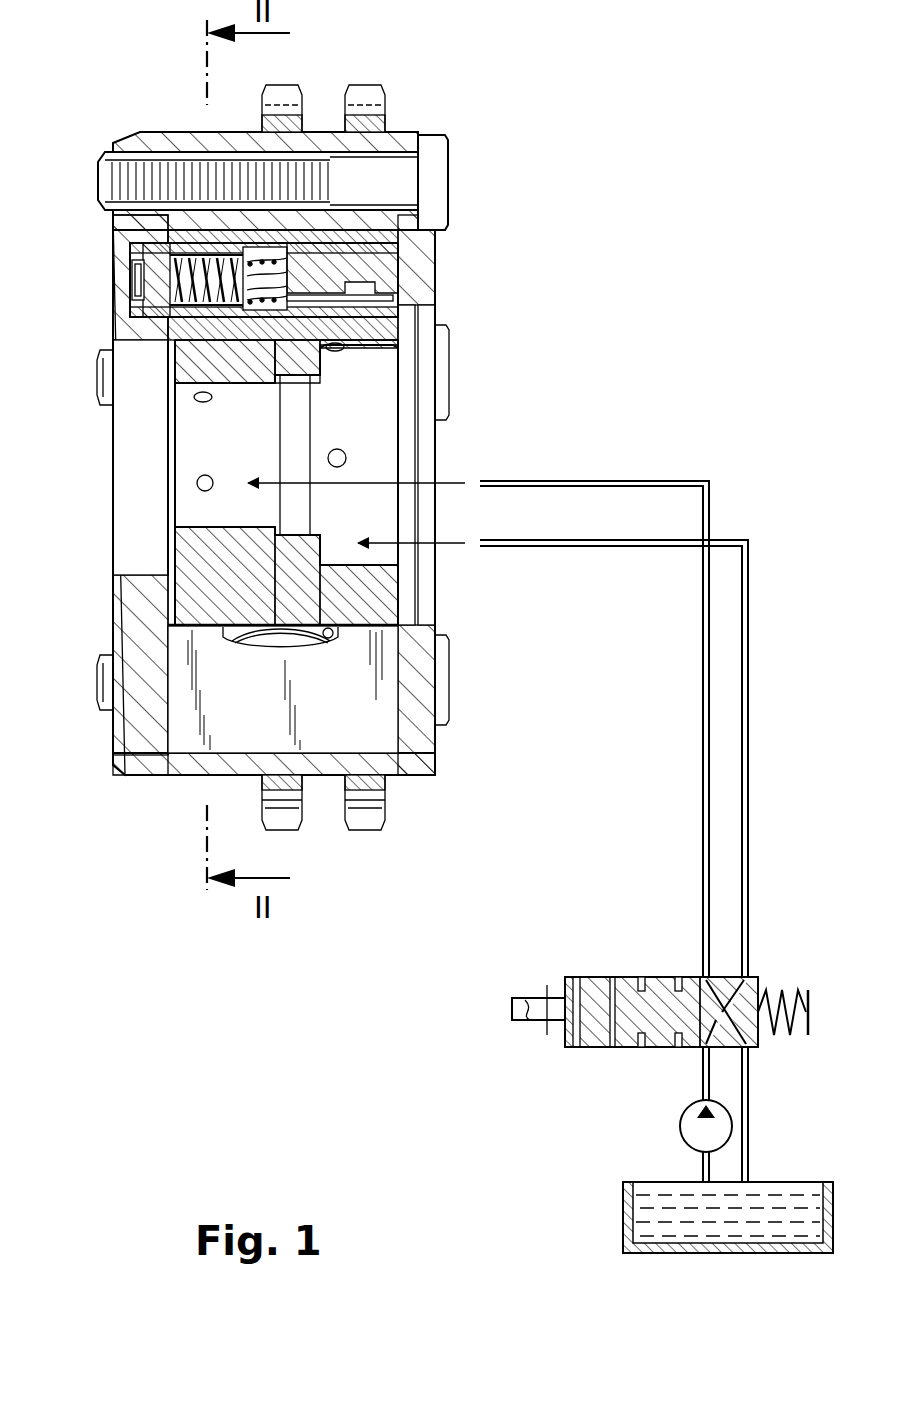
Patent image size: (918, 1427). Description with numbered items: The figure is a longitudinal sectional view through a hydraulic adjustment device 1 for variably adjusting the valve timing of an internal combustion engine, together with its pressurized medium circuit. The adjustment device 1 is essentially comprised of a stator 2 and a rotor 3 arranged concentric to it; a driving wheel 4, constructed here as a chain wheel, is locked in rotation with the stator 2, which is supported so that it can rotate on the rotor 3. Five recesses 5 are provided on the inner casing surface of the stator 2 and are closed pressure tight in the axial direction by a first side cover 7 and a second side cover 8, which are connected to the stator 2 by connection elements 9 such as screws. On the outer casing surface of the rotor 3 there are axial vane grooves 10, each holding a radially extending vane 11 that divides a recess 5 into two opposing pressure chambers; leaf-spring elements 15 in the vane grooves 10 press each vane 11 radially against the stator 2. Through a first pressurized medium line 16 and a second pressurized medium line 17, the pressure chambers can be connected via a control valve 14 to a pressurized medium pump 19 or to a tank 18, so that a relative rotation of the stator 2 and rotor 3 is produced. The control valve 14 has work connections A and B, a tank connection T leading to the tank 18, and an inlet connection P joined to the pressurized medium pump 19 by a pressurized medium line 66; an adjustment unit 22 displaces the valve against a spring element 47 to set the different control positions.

The hydraulic adjustment device 1 is at (405, 112).
The stator 2 is at (195, 140).
The rotor 3 is at (205, 553).
The driving wheel 4 is at (292, 812).
The recesses 5 is at (230, 745).
The first side cover 7 is at (130, 235).
The second side cover 8 is at (420, 272).
The connection elements 9 is at (435, 163).
The vane grooves 10 is at (357, 630).
The vane 11 is at (372, 730).
The control valve 14 is at (660, 977).
The leaf-spring elements 15 is at (250, 655).
The first pressurized medium line 16 is at (200, 483).
The second pressurized medium line 17 is at (342, 456).
The tank 18 is at (790, 1185).
The pressurized medium pump 19 is at (692, 1135).
The adjustment unit 22 is at (512, 1006).
The spring element 47 is at (808, 1005).
The pressurized medium line 66 is at (703, 1085).